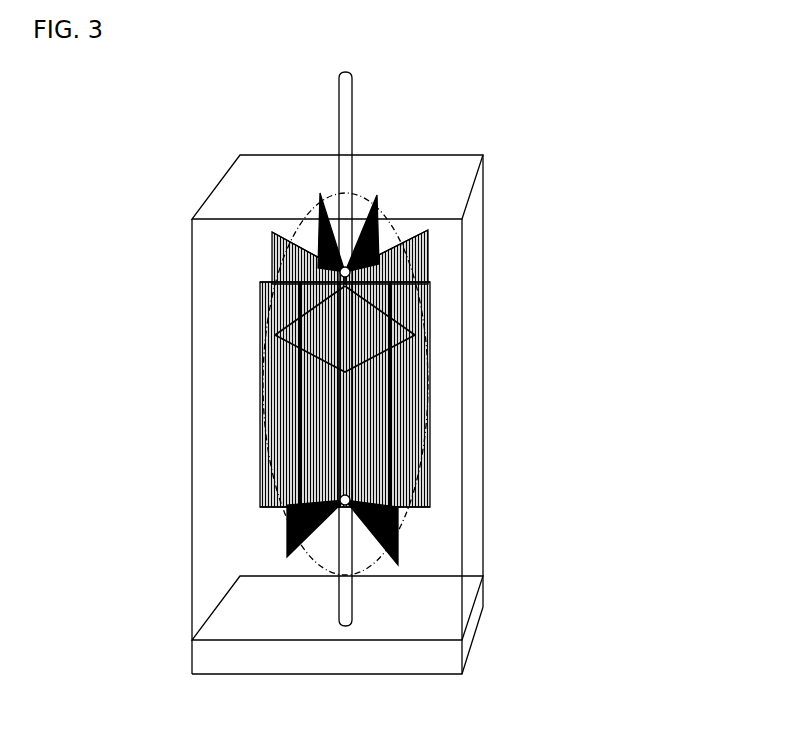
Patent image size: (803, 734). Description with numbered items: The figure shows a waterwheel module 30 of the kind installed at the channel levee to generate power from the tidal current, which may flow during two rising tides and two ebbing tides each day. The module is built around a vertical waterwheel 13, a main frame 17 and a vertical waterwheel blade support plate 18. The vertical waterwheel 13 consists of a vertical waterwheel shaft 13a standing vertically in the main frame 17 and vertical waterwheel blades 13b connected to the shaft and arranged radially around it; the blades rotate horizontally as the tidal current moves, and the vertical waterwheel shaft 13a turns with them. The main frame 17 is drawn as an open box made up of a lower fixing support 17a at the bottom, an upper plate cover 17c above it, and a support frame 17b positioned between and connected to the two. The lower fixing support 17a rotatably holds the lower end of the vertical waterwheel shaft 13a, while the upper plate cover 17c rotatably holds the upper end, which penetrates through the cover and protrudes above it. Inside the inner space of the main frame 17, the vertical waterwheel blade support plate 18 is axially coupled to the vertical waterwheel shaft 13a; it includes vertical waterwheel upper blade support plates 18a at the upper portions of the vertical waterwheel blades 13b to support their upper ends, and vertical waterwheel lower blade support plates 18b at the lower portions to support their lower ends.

The rotating apparatus 30 is at (124, 94).
The vertical waterwheel 13 is at (542, 487).
The vertical waterwheel shaft 13a is at (340, 602).
The vertical waterwheel blades 13b is at (420, 490).
The main frame 17 is at (682, 190).
The lower fixing support 17a is at (462, 640).
The support frame 17b is at (470, 416).
The upper plate cover 17c is at (453, 196).
The vertical waterwheel blade support plate 18 is at (98, 273).
The vertical waterwheel upper blade support plates 18a is at (270, 258).
The vertical waterwheel lower blade support plates 18b is at (325, 538).